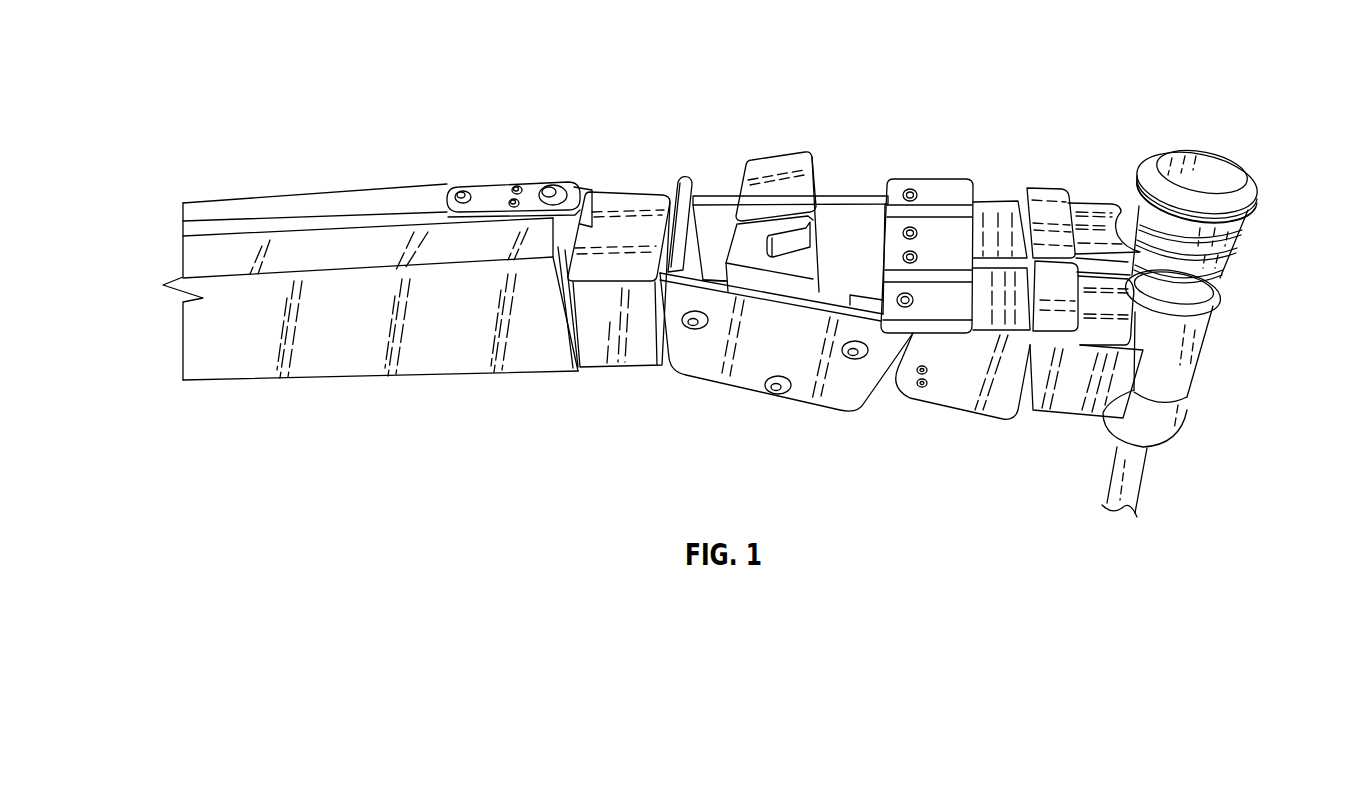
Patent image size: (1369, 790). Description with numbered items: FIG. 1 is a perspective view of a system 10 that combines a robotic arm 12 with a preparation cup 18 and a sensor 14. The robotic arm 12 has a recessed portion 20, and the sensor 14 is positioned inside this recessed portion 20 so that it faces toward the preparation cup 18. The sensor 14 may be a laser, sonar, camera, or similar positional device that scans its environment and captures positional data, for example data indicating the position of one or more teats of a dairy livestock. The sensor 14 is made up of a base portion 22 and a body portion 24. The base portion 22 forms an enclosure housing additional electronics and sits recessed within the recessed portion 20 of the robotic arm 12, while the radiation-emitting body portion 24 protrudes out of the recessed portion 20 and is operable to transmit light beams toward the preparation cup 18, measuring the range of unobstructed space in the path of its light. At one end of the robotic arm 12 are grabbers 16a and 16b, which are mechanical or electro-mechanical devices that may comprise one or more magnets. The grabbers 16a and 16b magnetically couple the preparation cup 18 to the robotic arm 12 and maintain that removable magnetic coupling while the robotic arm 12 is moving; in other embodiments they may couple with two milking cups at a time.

The system 10 is at (243, 74).
The robotic arm 12 is at (408, 364).
The sensor 14 is at (788, 290).
The grabber 16a is at (1077, 398).
The grabber 16b is at (1052, 183).
The preparation cup 18 is at (1246, 188).
The recessed portion 20 is at (716, 215).
The base portion 22 is at (822, 254).
The body portion 24 is at (786, 165).